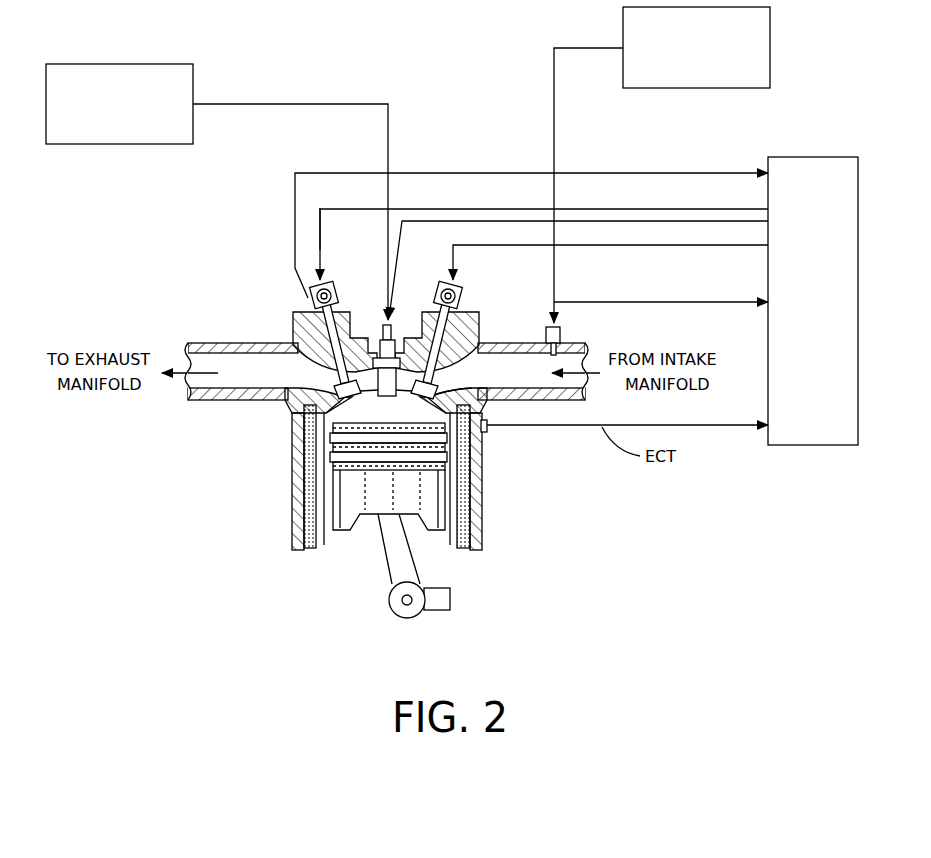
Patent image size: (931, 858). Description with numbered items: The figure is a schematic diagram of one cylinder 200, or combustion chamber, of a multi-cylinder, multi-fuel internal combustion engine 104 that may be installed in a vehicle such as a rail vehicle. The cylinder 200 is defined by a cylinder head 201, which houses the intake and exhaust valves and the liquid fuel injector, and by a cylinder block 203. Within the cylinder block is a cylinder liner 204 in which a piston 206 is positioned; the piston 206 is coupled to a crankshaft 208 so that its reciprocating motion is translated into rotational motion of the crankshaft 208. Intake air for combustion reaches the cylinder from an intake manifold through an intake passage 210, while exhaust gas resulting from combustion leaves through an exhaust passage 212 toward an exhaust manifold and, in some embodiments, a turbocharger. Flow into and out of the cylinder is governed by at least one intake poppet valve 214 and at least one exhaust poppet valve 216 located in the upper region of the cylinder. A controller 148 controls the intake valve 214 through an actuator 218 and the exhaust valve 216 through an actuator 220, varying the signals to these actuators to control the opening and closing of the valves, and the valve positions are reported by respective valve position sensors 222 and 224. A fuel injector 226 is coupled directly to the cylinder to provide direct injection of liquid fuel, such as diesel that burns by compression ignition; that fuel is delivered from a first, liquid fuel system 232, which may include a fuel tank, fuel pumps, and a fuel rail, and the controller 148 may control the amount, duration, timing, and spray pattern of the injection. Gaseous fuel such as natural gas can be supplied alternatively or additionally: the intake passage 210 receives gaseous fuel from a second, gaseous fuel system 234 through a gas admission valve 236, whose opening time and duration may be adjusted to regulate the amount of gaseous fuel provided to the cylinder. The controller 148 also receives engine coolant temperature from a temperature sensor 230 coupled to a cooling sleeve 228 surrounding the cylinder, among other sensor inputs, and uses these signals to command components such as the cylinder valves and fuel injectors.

The engine 104 is at (420, 150).
The controller 148 is at (796, 308).
The cylinder 200 is at (405, 421).
The cylinder head 201 is at (235, 278).
The cylinder block 203 is at (532, 500).
The cylinder liner 204 is at (333, 537).
The piston 206 is at (370, 505).
The crankshaft 208 is at (428, 590).
The intake passage 210 is at (527, 385).
The exhaust passage 212 is at (295, 385).
The intake poppet valve 214 is at (450, 372).
The exhaust poppet valve 216 is at (340, 375).
The intake valve actuator 218 is at (446, 290).
The exhaust valve actuator 220 is at (330, 285).
The intake valve position sensor 222 is at (456, 300).
The exhaust valve position sensor 224 is at (312, 300).
The fuel injector 226 is at (380, 335).
The cooling sleeve 228 is at (462, 505).
The temperature sensor 230 is at (488, 430).
The liquid fuel system 232 is at (106, 142).
The gaseous fuel system 234 is at (682, 82).
The gas admission valve 236 is at (560, 333).